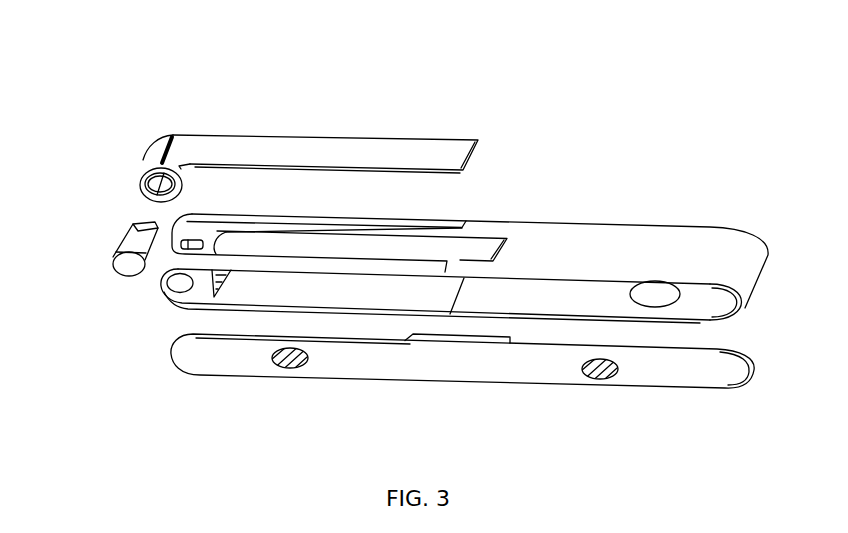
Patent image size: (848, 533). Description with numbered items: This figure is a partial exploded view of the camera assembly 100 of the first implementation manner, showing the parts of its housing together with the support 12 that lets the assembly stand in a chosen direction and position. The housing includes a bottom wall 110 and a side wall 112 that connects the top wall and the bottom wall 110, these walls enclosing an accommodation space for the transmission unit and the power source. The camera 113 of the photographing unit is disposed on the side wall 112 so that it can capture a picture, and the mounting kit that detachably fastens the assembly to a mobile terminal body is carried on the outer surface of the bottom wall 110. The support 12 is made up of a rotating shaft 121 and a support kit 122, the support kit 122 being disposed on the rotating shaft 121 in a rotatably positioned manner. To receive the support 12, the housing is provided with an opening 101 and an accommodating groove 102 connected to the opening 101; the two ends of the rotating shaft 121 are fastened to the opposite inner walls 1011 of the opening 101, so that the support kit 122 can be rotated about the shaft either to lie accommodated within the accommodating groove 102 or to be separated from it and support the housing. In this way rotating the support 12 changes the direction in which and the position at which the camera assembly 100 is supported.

The camera assembly 100 is at (512, 80).
The support 12 is at (55, 109).
The rotating shaft 121 is at (143, 221).
The support kit 122 is at (160, 143).
The opening 101 is at (167, 253).
The inner walls 1011 is at (217, 237).
The accommodating groove 102 is at (320, 243).
The bottom wall 110 is at (488, 365).
The side wall 112 is at (698, 293).
The camera 113 is at (640, 293).